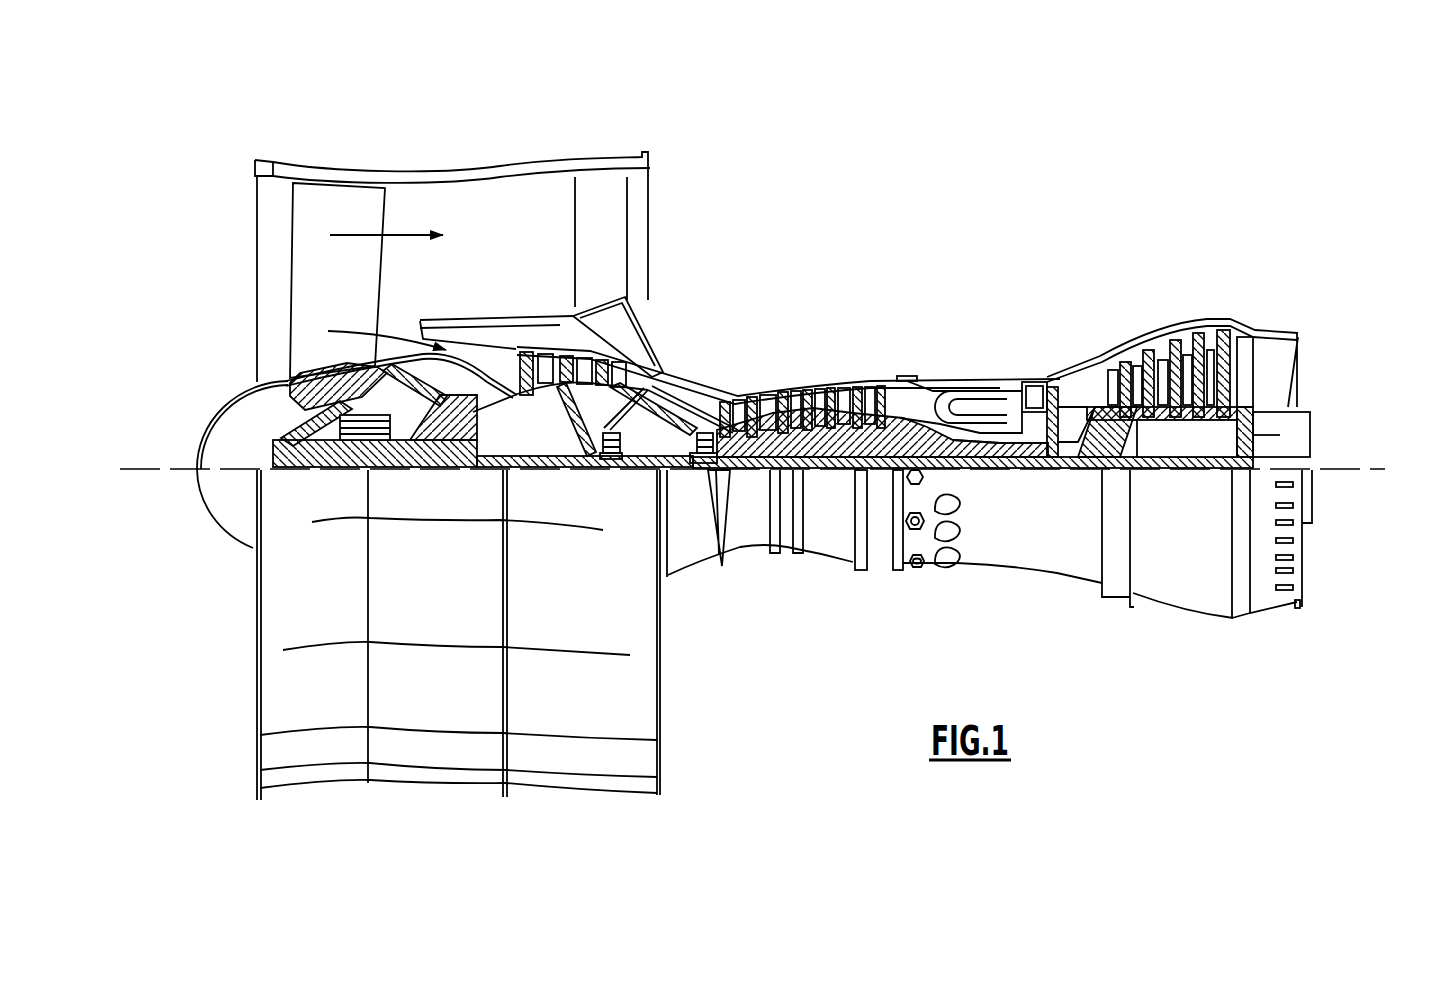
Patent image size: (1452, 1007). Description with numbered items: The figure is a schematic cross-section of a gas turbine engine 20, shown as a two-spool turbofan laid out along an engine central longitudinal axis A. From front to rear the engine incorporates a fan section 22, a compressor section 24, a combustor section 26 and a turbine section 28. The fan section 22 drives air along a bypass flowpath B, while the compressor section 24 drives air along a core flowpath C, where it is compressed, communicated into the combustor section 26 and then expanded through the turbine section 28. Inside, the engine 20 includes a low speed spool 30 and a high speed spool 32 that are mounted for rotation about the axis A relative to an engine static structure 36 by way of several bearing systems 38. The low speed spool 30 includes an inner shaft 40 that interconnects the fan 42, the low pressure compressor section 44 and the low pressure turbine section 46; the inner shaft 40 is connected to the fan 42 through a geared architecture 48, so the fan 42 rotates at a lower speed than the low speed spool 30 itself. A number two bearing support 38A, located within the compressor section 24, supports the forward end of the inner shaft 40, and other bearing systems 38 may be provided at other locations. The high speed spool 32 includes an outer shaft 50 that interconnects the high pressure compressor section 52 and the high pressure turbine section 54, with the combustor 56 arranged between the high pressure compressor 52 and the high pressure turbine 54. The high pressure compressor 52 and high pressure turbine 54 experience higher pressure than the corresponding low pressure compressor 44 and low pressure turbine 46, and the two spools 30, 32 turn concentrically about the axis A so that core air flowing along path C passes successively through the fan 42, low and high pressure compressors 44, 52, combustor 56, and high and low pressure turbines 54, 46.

The gas turbine engine 20 is at (983, 201).
The fan section 22 is at (378, 153).
The compressor section 24 is at (714, 364).
The combustor section 26 is at (969, 318).
The turbine section 28 is at (1115, 296).
The low speed spool 30 is at (1027, 480).
The high speed spool 32 is at (830, 440).
The engine static structure 36 is at (877, 575).
The bearing systems 38 is at (713, 462).
The #2 bearing support 38A is at (607, 458).
The inner shaft 40 is at (677, 471).
The fan 42 is at (347, 298).
The low pressure compressor section 44 is at (583, 360).
The low pressure turbine section 46 is at (1172, 336).
The geared architecture 48 is at (457, 458).
The outer shaft 50 is at (973, 458).
The high pressure compressor section 52 is at (810, 392).
The high pressure turbine section 54 is at (1035, 372).
The combustor 56 is at (965, 403).
The engine central longitudinal axis A is at (1397, 469).
The bypass flowpath B is at (347, 234).
The core flowpath C is at (376, 331).